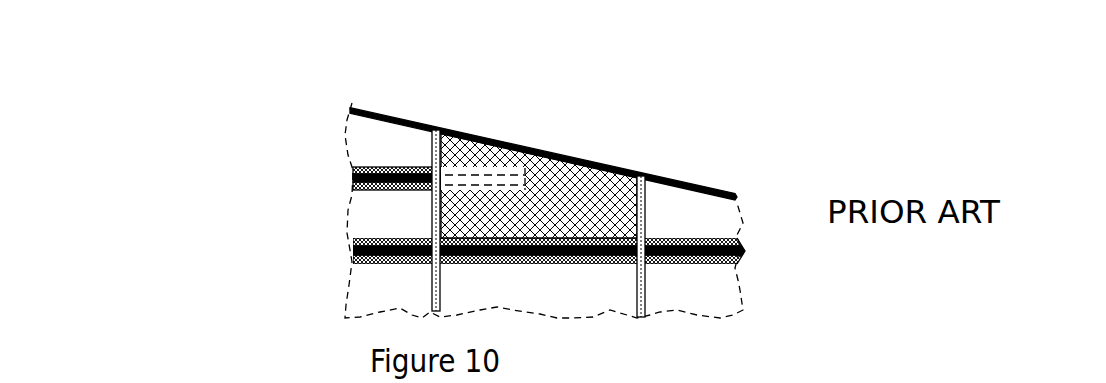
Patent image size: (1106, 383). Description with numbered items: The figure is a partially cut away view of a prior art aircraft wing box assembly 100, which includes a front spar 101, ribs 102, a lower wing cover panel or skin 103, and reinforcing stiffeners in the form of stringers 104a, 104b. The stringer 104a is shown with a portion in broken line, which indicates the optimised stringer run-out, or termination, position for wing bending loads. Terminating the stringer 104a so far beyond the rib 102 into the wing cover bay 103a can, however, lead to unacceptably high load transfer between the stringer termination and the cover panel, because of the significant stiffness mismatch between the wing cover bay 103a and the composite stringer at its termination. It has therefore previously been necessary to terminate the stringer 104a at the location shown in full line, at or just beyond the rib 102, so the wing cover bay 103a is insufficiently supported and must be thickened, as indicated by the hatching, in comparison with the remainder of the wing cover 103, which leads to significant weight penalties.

The prior art aircraft wing box assembly 100 is at (491, 177).
The front spar 101 is at (715, 190).
The ribs 102 is at (435, 118).
The lower wing cover panel 103 is at (700, 287).
The wing cover bay 103a is at (565, 156).
The stringer 104a is at (355, 177).
The stringer 104b is at (355, 249).